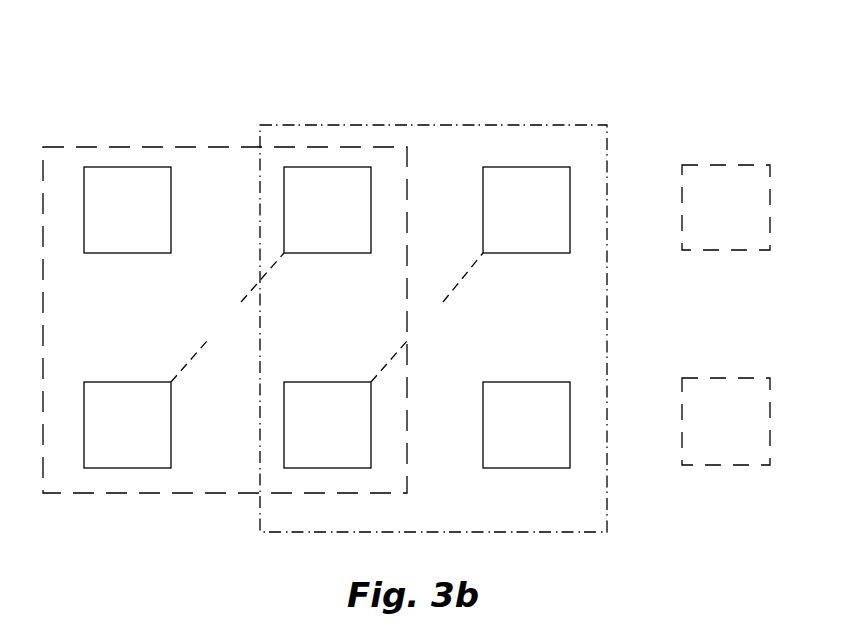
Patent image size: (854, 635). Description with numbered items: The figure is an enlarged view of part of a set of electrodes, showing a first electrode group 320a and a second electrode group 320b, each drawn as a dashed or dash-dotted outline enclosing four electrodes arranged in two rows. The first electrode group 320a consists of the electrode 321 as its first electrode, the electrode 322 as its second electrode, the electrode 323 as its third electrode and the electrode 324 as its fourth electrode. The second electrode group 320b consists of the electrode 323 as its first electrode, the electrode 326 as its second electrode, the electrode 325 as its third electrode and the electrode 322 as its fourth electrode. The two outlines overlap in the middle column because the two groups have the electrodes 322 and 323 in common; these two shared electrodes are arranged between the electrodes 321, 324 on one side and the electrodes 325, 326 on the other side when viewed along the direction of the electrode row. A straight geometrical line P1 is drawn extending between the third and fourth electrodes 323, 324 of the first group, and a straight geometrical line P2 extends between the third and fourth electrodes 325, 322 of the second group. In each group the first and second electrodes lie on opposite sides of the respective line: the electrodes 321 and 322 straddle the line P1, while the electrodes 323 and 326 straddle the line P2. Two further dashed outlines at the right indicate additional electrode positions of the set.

The first electrode group 320a is at (200, 147).
The second electrode group 320b is at (402, 122).
The electrode 321 is at (127, 210).
The electrode 322 is at (327, 425).
The electrode 323 is at (327, 210).
The electrode 324 is at (127, 425).
The electrode 325 is at (526, 210).
The electrode 326 is at (526, 425).
The straight geometrical line P1 is at (227, 317).
The straight geometrical line P2 is at (427, 317).